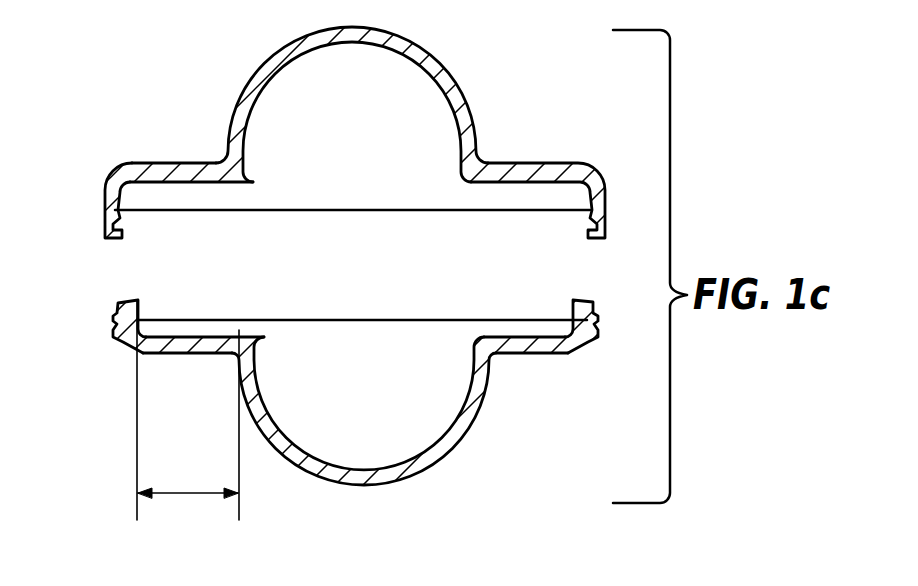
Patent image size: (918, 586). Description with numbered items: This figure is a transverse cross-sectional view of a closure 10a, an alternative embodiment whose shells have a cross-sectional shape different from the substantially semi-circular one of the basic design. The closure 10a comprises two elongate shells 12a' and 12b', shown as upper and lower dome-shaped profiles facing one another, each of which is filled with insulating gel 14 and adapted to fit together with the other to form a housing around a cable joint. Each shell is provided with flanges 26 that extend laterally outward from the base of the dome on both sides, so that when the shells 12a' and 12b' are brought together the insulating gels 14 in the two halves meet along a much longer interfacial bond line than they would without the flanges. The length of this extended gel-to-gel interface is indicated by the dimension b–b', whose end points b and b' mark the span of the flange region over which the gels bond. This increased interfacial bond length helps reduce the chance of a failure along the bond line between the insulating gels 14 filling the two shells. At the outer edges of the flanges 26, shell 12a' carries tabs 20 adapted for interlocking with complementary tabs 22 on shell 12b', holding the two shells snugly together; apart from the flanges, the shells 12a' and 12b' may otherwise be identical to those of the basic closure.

The closure 10a is at (547, 137).
The shell 12b' is at (459, 293).
The shell 12a' is at (459, 293).
The insulating gel 14 is at (407, 82).
The complementary tabs 22 is at (106, 191).
The tabs 20 is at (113, 334).
The flanges 26 is at (170, 356).
The dimension end point b is at (187, 416).
The dimension end point b' is at (226, 431).